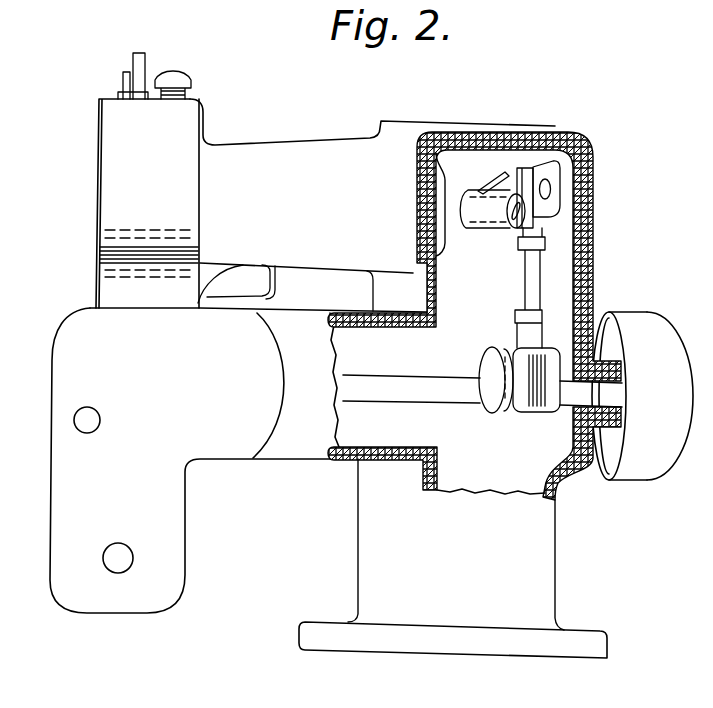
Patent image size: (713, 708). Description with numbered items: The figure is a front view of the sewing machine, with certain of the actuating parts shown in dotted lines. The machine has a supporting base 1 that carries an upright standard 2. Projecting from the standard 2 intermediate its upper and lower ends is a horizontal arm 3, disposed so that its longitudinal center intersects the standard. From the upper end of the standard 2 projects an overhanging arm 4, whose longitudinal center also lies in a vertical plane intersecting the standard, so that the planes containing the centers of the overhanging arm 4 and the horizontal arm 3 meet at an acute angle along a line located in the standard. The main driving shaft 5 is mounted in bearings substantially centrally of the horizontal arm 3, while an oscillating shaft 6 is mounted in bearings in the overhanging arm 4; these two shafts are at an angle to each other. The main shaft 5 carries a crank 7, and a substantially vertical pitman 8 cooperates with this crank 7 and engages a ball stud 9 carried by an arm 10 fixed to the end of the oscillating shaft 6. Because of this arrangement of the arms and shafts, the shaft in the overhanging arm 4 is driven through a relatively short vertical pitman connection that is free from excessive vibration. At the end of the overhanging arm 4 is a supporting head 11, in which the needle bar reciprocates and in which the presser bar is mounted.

The supporting base 1 is at (547, 640).
The standard 2 is at (560, 275).
The horizontal arm 3 is at (312, 445).
The overhanging arm 4 is at (256, 162).
The main driving shaft 5 is at (393, 385).
The oscillating shaft 6 is at (510, 227).
The crank 7 is at (493, 357).
The pitman 8 is at (537, 267).
The ball stud 9 is at (547, 192).
The arm 10 is at (480, 190).
The supporting head 11 is at (127, 182).